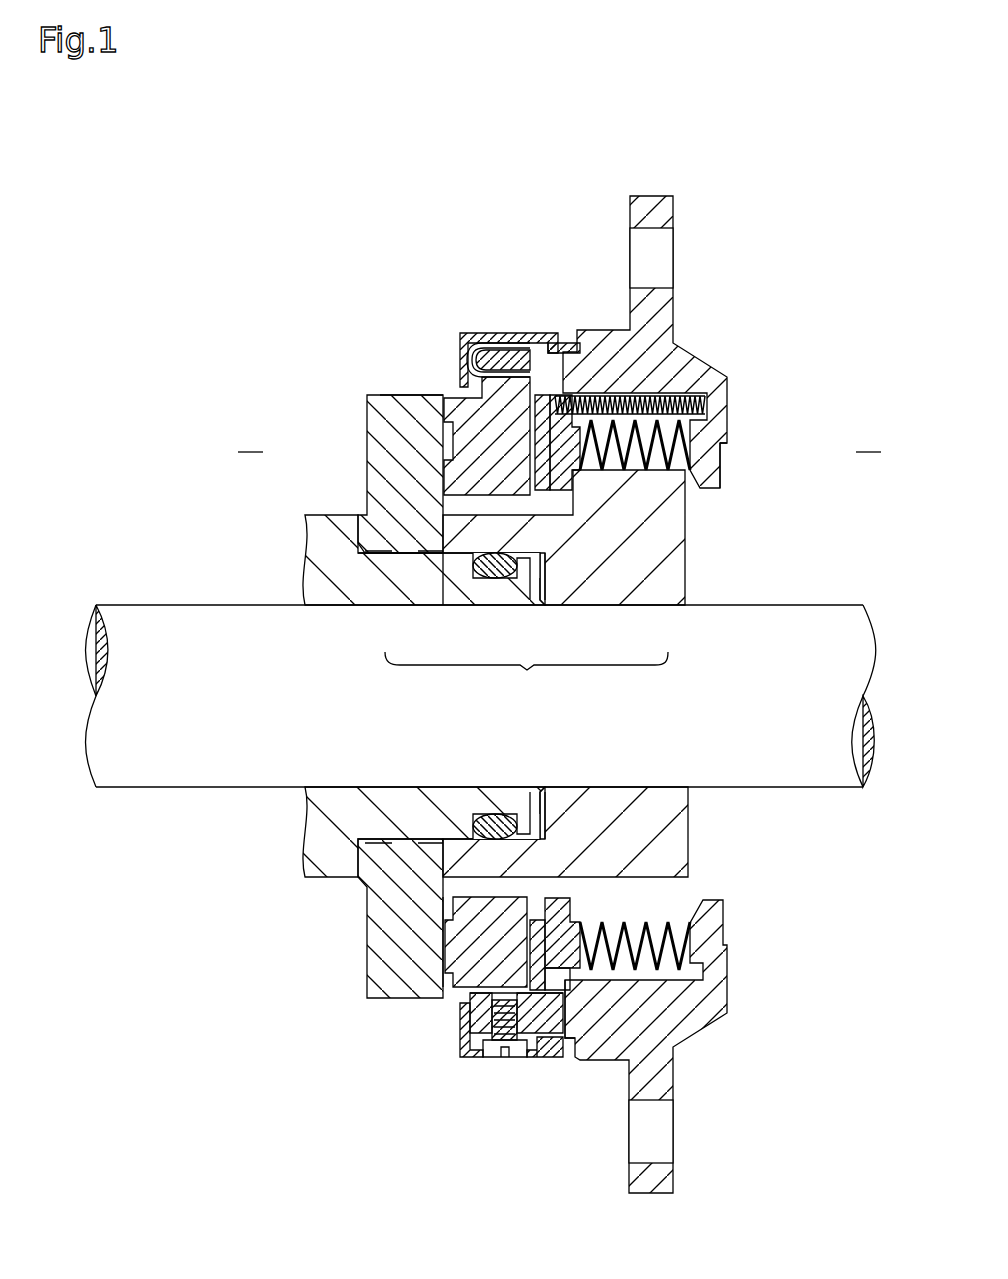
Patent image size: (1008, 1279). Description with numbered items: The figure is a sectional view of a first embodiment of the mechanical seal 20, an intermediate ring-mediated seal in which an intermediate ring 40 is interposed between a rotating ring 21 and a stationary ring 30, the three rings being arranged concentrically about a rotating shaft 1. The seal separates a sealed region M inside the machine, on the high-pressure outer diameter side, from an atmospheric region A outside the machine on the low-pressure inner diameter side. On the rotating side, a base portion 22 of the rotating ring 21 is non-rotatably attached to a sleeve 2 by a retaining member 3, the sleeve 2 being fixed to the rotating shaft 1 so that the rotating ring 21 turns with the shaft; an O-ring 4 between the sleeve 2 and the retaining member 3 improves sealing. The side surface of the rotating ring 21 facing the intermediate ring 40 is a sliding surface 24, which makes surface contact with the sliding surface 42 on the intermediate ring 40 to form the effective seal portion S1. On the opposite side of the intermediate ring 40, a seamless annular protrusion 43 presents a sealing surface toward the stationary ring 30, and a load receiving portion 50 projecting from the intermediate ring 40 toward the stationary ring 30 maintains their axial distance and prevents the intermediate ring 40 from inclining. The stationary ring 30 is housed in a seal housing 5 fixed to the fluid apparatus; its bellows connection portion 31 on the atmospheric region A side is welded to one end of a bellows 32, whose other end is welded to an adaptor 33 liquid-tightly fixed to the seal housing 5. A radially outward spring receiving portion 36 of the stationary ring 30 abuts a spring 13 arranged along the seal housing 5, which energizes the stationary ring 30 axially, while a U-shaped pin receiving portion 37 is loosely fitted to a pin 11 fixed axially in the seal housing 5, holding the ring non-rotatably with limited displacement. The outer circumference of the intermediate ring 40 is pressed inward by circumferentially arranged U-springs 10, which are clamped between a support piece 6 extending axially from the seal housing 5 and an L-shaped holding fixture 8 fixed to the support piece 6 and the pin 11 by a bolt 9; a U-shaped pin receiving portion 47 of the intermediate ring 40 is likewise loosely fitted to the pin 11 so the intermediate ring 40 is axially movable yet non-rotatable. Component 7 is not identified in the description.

The rotating shaft 1 is at (128, 770).
The sleeve 2 is at (322, 846).
The retaining member 3 is at (680, 845).
The O-ring 4 is at (370, 902).
The seal housing 5 is at (700, 1020).
The support piece 6 is at (545, 1050).
The drive collar 7 is at (466, 1010).
The holding fixture 8 is at (474, 1050).
The bolt 9 is at (512, 1050).
The U-springs 10 is at (463, 356).
The pin 11 is at (562, 1037).
The spring 13 is at (688, 397).
The mechanical seal 20 is at (526, 677).
The rotating ring 21 is at (403, 561).
The base portion 22 is at (380, 476).
The sliding surface 24 is at (453, 987).
The stationary ring 30 is at (627, 500).
The bellows connection portion 31 is at (575, 393).
The bellows 32 is at (631, 475).
The adaptor 33 is at (727, 452).
The spring receiving portion 36 is at (552, 393).
The pin receiving portion 37 is at (560, 990).
The intermediate ring 40 is at (473, 497).
The sliding surface 42 is at (443, 938).
The annular protrusion 43 is at (542, 498).
The pin receiving portion 47 is at (470, 1003).
The load receiving portion 50 is at (518, 560).
The effective seal portion S1 is at (414, 397).
The sealed region M is at (250, 437).
The atmospheric region A is at (868, 437).